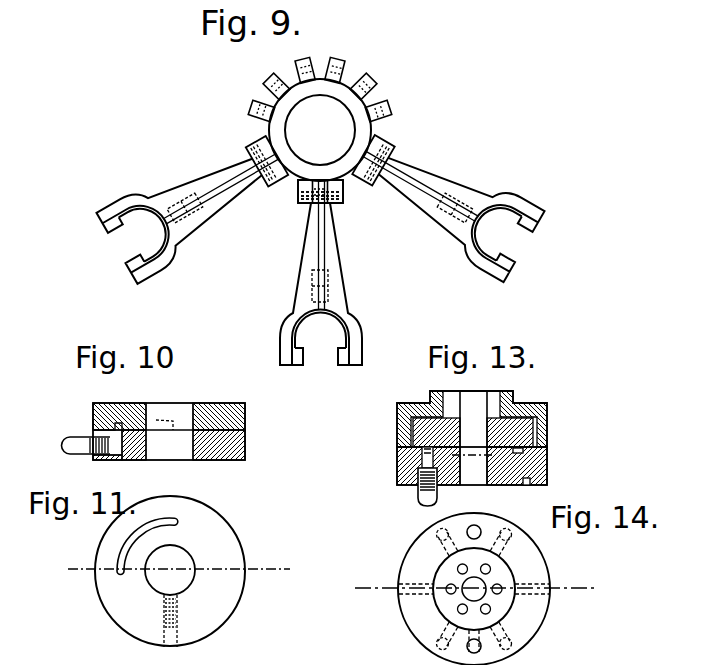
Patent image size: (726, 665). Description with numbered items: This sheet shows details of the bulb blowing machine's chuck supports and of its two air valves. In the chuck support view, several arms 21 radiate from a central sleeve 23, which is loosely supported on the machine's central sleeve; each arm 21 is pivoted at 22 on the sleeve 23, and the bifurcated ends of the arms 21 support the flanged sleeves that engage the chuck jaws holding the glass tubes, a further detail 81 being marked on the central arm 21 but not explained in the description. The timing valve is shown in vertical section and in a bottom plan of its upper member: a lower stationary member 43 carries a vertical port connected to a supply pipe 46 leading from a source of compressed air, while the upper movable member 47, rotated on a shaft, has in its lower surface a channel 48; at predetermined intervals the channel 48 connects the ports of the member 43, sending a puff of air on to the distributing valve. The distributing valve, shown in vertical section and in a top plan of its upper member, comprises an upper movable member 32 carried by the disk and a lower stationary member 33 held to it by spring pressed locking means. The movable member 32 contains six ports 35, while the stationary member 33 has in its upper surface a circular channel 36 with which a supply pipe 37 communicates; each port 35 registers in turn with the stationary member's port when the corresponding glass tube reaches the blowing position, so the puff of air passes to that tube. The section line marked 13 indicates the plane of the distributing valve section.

In FIG. 9, the arm 21 is at (348, 341).
In FIG. 9, the pivot 22 is at (343, 201).
In FIG. 9, the sleeve 23 is at (286, 143).
In FIG. 9, the pin hole 81 is at (329, 293).
In FIG. 10, the supply pipe 46 is at (62, 445).
In FIG. 10, the upper movable member 47 is at (246, 411).
In FIG. 11, the upper movable member 47 is at (246, 541).
In FIG. 10, the lower stationary member 43 is at (246, 447).
In FIG. 10, the channel 48 is at (156, 420).
In FIG. 11, the channel 48 is at (112, 558).
In FIG. 13, the upper movable member 32 is at (548, 406).
In FIG. 14, the upper movable member 32 is at (552, 616).
In FIG. 13, the lower stationary member 33 is at (548, 470).
In FIG. 13, the ports 35 is at (549, 432).
In FIG. 14, the ports 35 is at (448, 588).
In FIG. 13, the circular channel 36 is at (421, 452).
In FIG. 13, the supply pipe 37 is at (418, 497).
In FIG. 14, the stopper 13 is at (472, 589).